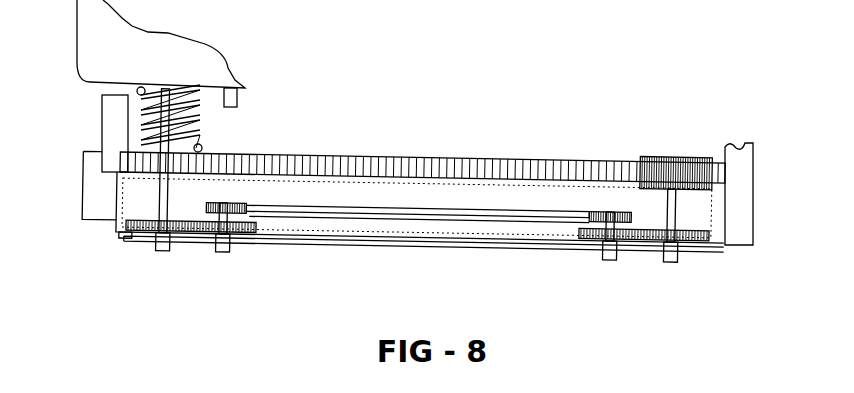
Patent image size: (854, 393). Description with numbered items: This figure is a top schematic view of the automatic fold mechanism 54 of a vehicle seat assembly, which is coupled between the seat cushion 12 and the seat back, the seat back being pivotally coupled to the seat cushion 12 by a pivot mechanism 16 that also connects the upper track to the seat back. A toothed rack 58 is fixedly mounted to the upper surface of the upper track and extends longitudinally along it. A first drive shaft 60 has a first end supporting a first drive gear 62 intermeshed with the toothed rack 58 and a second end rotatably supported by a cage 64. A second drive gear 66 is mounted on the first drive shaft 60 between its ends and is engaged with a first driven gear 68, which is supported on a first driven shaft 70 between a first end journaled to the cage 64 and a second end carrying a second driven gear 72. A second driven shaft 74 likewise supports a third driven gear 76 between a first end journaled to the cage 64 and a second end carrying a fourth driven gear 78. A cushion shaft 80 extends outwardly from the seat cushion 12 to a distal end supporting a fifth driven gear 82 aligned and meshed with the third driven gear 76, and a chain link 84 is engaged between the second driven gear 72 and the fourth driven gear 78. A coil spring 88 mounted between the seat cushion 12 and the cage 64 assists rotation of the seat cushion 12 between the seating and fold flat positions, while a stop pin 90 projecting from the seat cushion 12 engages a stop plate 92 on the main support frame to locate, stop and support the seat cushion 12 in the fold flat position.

The seat cushion 12 is at (126, 23).
The pivot mechanism 16 is at (738, 147).
The automatic fold mechanism 54 is at (455, 137).
The toothed rack 58 is at (342, 158).
The first drive shaft 60 is at (672, 203).
The first drive gear 62 is at (672, 152).
The cage 64 is at (517, 235).
The second drive gear 66 is at (683, 236).
The first driven gear 68 is at (585, 226).
The first driven shaft 70 is at (618, 246).
The second driven gear 72 is at (590, 206).
The second driven shaft 74 is at (228, 246).
The third driven gear 76 is at (205, 228).
The fourth driven gear 78 is at (250, 204).
The cushion shaft 80 is at (160, 207).
The fifth driven gear 82 is at (152, 228).
The chain link 84 is at (343, 209).
The coil spring 88 is at (207, 110).
The stop pin 90 is at (240, 97).
The stop plate 92 is at (104, 132).